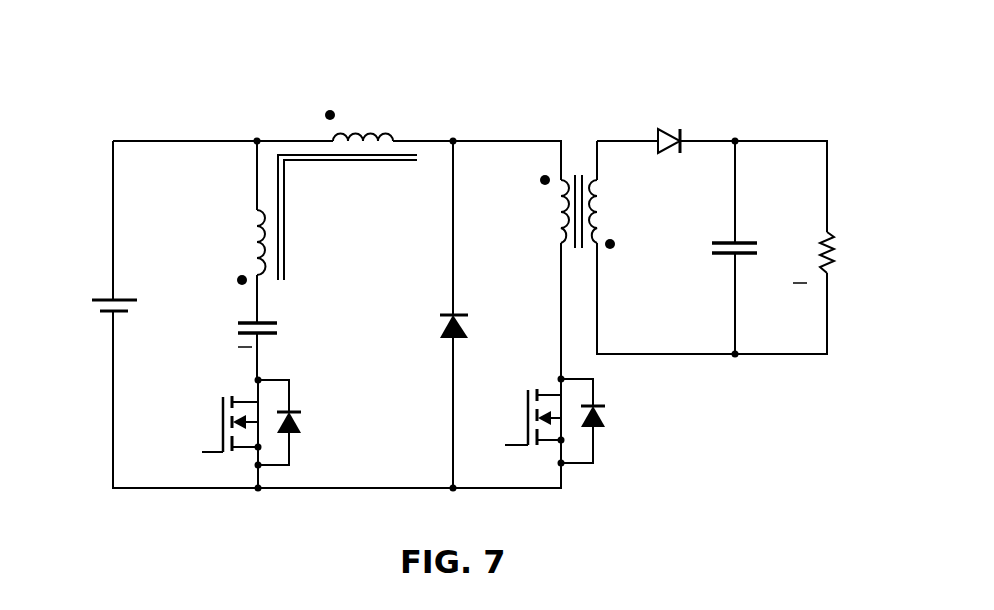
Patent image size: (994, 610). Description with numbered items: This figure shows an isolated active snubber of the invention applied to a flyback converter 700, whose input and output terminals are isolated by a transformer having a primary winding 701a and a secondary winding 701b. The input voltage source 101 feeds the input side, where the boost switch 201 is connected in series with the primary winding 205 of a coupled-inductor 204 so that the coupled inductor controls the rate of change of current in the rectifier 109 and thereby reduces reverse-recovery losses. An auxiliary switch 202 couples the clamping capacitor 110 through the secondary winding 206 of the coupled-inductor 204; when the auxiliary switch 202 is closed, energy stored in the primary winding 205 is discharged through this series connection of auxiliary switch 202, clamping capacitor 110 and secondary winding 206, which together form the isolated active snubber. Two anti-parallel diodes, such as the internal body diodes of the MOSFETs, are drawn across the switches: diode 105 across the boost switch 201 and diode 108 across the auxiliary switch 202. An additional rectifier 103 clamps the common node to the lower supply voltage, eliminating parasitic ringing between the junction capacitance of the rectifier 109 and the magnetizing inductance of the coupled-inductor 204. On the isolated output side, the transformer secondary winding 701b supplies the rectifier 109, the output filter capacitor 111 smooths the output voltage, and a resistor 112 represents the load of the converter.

The flyback converter 700 is at (585, 92).
The input voltage source 101 is at (122, 300).
The primary winding 205 is at (255, 245).
The secondary winding 206 is at (390, 126).
The coupled-inductor 204 is at (348, 187).
The clamping capacitor 110 is at (268, 323).
The additional rectifier 103 is at (462, 330).
The auxiliary switch 202 is at (207, 452).
The anti-parallel diode 108 is at (304, 425).
The boost switch 201 is at (512, 450).
The anti-parallel diode 105 is at (608, 428).
The transformer primary winding 701a is at (558, 212).
The transformer secondary winding 701b is at (598, 208).
The boost rectifier 109 is at (680, 128).
The output filter capacitor 111 is at (740, 240).
The resistor 112 is at (830, 232).